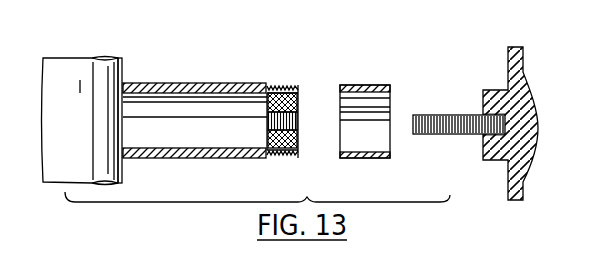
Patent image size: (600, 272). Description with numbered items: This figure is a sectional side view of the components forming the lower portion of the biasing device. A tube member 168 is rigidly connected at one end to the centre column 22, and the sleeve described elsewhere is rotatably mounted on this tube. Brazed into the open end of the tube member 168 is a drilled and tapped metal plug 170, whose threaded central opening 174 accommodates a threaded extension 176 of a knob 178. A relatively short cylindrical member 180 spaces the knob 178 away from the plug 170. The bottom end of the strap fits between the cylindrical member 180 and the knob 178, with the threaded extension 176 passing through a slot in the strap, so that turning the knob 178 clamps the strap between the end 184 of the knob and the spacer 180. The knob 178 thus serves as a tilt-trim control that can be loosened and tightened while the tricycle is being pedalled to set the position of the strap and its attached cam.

The centre column 22 is at (72, 88).
The tube member 168 is at (217, 156).
The metal plug 170 is at (314, 110).
The threaded central opening 174 is at (298, 123).
The cylindrical member 180 is at (363, 84).
The threaded extension 176 is at (440, 113).
The end of the knob 184 is at (482, 145).
The knob 178 is at (503, 188).